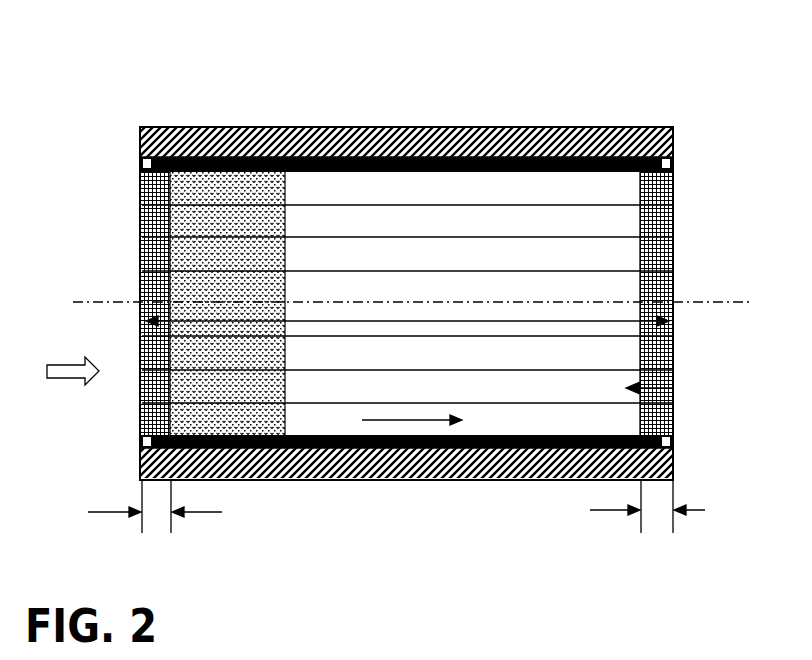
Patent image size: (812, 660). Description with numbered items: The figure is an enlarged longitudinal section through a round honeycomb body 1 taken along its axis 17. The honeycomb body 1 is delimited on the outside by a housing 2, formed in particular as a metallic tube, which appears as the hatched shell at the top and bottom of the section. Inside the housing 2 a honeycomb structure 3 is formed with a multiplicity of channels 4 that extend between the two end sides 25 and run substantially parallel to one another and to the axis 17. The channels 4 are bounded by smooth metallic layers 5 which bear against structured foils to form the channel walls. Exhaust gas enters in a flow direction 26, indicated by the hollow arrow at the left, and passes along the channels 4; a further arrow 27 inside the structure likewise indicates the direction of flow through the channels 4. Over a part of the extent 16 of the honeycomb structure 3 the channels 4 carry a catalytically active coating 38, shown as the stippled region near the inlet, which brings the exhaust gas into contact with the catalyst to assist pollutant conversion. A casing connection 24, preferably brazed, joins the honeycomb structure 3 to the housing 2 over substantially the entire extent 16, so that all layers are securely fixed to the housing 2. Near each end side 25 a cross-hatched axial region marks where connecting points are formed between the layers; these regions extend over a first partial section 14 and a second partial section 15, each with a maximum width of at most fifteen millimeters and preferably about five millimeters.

The honeycomb body 1 is at (677, 388).
The housing 2 is at (337, 127).
The honeycomb structure 3 is at (237, 390).
The channels 4 is at (540, 412).
The smooth metallic layers 5 is at (607, 202).
The first partial section 14 is at (155, 525).
The second partial section 15 is at (647, 525).
The extent of the honeycomb structure 16 is at (312, 320).
The axis 17 is at (80, 300).
The casing connection 24 is at (472, 127).
The end sides 25 is at (140, 214).
The flow direction 26 is at (70, 372).
The flow direction arrow 27 is at (413, 420).
The catalytically active coating 38 is at (212, 187).